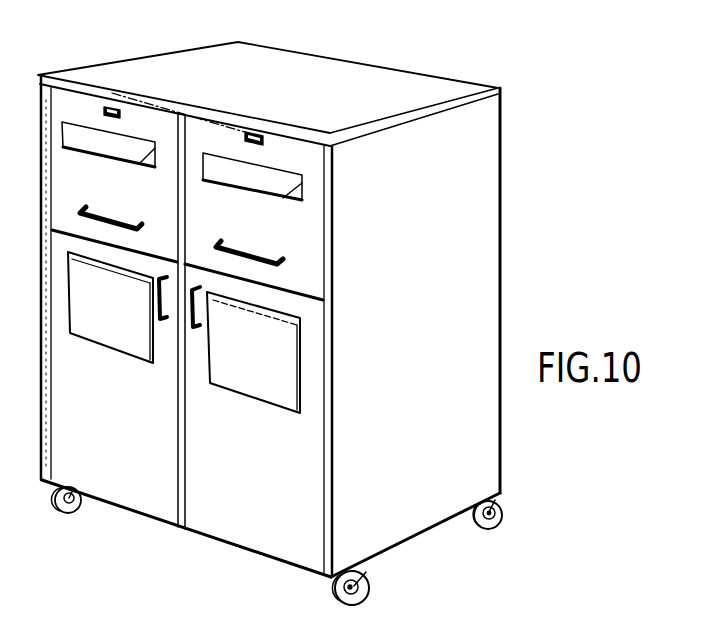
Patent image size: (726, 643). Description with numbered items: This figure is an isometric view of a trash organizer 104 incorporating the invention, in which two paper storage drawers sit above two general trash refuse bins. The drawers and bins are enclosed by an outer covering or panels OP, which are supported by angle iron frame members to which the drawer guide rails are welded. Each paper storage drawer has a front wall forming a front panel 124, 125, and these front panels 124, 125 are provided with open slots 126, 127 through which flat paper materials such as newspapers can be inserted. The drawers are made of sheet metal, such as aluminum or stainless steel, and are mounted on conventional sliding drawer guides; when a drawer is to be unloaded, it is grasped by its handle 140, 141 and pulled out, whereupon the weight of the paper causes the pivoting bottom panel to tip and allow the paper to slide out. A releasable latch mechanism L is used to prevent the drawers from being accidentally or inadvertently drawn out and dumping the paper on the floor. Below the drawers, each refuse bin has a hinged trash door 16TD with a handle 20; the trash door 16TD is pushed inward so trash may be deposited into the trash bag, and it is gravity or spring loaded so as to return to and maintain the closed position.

The mobile storage cart 104 is at (323, 324).
The outer covering or panels OP is at (429, 399).
The releasable latch mechanism L is at (105, 107).
The open slot 126 is at (105, 140).
The open slot 127 is at (236, 170).
The front panel 124 is at (107, 190).
The front panel 125 is at (251, 189).
The handle 140 is at (115, 219).
The handle 141 is at (250, 250).
The hinged trash door 16TD is at (113, 338).
The handle 20 is at (194, 327).